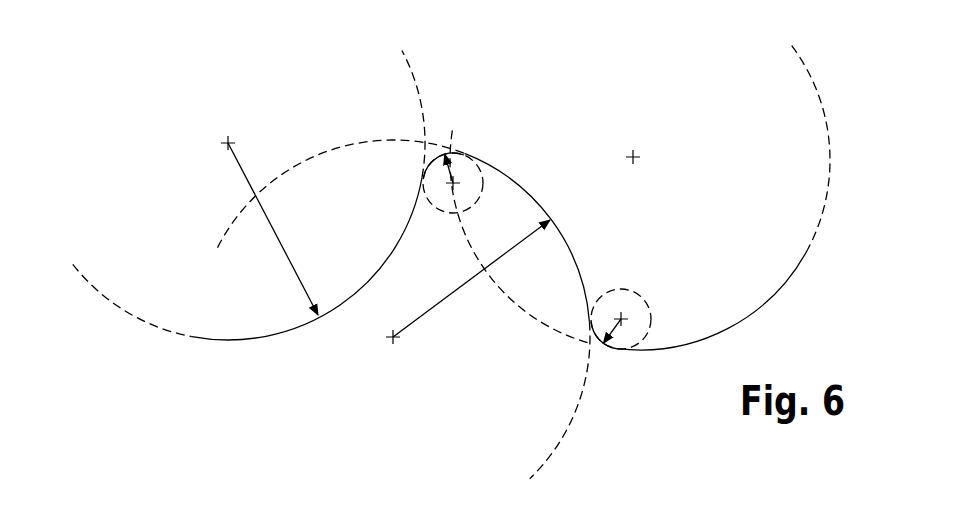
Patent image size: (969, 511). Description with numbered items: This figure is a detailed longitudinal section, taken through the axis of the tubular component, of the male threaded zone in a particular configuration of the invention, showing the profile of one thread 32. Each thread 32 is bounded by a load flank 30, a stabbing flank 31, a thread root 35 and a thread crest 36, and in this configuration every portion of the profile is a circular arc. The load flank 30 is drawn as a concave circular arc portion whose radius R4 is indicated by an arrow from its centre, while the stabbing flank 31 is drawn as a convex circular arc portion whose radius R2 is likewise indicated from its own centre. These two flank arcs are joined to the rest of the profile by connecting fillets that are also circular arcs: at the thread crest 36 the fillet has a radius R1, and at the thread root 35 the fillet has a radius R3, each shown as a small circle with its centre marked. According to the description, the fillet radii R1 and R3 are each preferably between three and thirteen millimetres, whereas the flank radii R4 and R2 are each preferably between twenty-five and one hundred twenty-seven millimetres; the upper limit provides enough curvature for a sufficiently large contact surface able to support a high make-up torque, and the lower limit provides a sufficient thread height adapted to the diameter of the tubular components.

The load flank 30 is at (373, 277).
The stabbing flank 31 is at (577, 263).
The thread 32 is at (447, 367).
The thread root 35 is at (596, 343).
The thread crest 36 is at (427, 140).
The radius of the connecting fillet at the thread crest R1 is at (440, 163).
The radius of the stabbing flank profile R2 is at (463, 287).
The radius of the connecting fillet at the thread root R3 is at (633, 351).
The radius of the load flank profile R4 is at (292, 268).